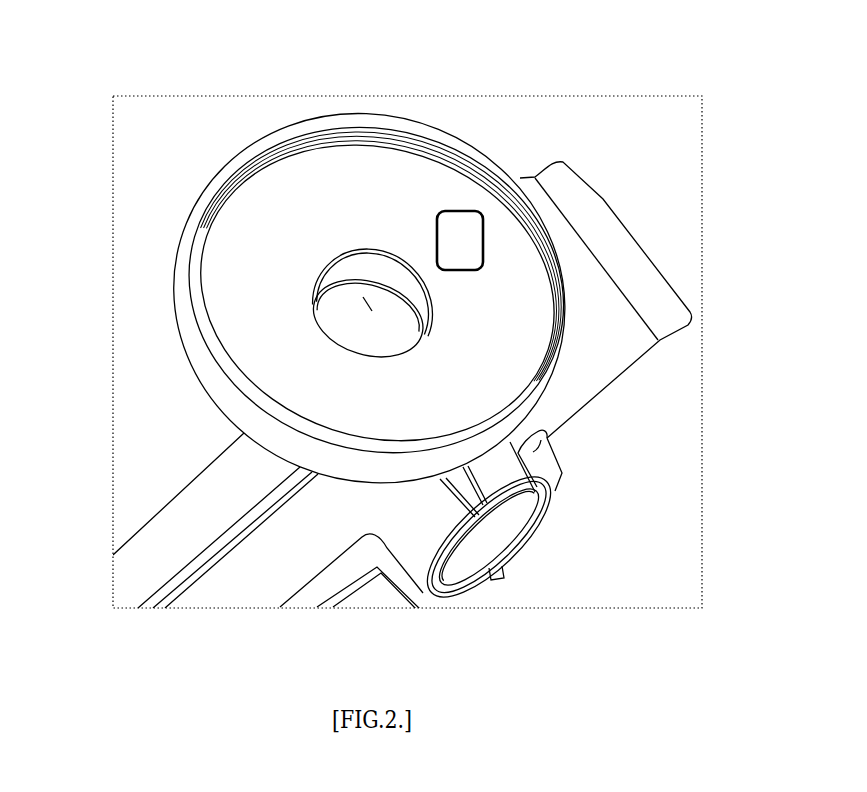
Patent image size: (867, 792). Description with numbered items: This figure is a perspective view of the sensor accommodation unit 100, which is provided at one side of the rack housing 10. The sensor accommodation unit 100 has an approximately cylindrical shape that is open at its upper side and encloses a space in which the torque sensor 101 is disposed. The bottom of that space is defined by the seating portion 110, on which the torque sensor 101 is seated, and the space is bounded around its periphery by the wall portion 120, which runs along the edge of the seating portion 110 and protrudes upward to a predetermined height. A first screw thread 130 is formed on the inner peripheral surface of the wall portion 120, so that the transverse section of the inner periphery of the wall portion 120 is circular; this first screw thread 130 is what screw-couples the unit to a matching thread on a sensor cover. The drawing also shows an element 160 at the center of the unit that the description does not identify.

The sensor accommodation unit 100 is at (373, 343).
The torque sensor 101 is at (483, 240).
The seating portion 110 is at (308, 195).
The wall portion 120 is at (360, 462).
The first screw thread 130 is at (397, 138).
The central hub 160 is at (386, 324).
The rack housing 10 is at (187, 520).